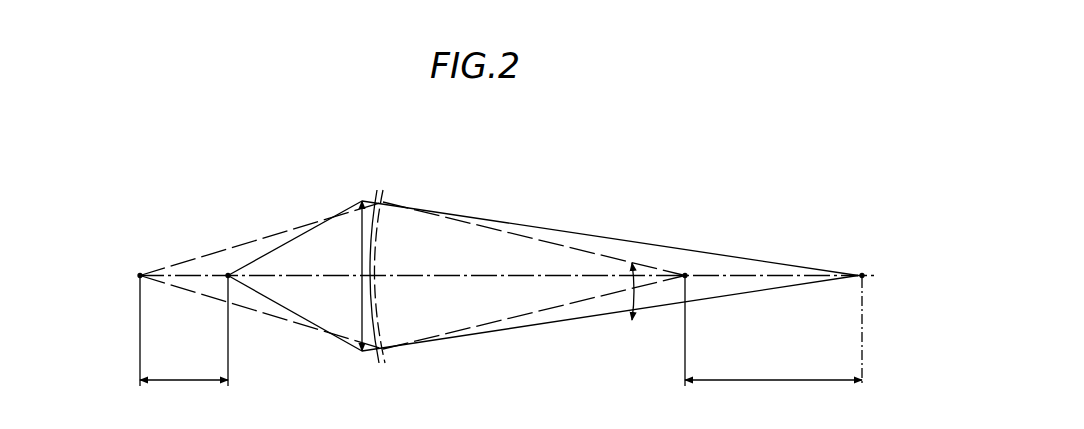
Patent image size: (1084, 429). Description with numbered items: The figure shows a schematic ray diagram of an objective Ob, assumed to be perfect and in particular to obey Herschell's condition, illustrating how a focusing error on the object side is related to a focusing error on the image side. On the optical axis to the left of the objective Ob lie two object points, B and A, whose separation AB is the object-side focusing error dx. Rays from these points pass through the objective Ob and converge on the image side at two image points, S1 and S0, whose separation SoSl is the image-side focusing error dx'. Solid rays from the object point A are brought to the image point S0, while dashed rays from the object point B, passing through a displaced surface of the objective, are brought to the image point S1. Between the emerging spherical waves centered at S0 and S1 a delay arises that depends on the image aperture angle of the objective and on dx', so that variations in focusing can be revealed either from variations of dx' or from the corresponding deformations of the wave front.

The object point B is at (257, 275).
The object point A is at (288, 276).
The objective Ob is at (596, 267).
The image point S1 is at (676, 317).
The image point S0 is at (851, 318).
The focusing error at the object point dx is at (184, 332).
The focusing error at the image point dx' is at (773, 368).